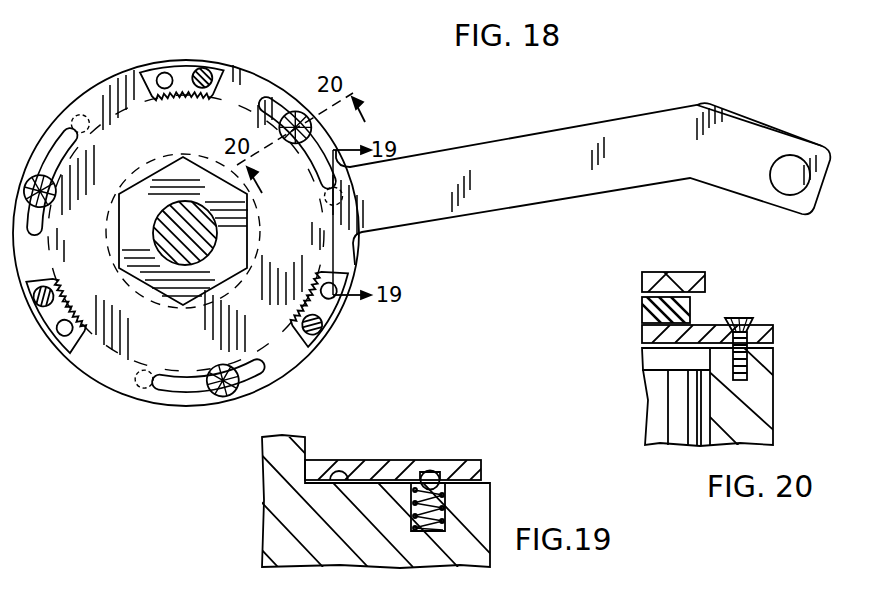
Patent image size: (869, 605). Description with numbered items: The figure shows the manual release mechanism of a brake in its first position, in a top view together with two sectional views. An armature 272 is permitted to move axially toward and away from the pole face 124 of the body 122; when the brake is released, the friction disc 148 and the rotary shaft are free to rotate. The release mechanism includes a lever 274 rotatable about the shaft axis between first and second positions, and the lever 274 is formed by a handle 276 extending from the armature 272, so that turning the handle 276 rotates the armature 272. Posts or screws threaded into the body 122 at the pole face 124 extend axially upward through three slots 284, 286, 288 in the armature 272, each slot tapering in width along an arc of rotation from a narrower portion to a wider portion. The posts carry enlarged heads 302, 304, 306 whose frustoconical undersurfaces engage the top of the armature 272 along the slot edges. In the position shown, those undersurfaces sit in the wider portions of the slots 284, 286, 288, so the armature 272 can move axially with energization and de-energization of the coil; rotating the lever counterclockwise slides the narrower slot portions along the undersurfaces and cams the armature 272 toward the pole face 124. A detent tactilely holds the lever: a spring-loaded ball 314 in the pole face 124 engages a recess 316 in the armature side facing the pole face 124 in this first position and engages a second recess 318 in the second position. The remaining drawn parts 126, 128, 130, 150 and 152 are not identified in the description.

In FIG. 19, the body 122 is at (449, 560).
In FIG. 20, the body 122 is at (756, 437).
In FIG. 20, the pole face 124 is at (768, 348).
In FIG. 18, the ratchet segment 126 is at (196, 62).
In FIG. 18, the ratchet segment 128 is at (322, 326).
In FIG. 18, the ratchet segment 130 is at (45, 322).
In FIG. 20, the friction disc 148 is at (694, 306).
In FIG. 20, the cover bar 150 is at (690, 277).
In FIG. 18, the hex nut 152 is at (220, 271).
In FIG. 18, the armature 272 is at (222, 133).
In FIG. 19, the armature 272 is at (372, 465).
In FIG. 20, the armature 272 is at (768, 330).
In FIG. 18, the lever 274 is at (448, 135).
In FIG. 18, the handle 276 is at (578, 126).
In FIG. 18, the slot 284 is at (301, 172).
In FIG. 18, the slot 286 is at (180, 385).
In FIG. 18, the slot 288 is at (56, 162).
In FIG. 18, the enlarged head 302 is at (296, 113).
In FIG. 20, the enlarged head 302 is at (746, 318).
In FIG. 18, the enlarged head 304 is at (220, 397).
In FIG. 18, the enlarged head 306 is at (40, 175).
In FIG. 19, the spring-loaded ball 314 is at (426, 469).
In FIG. 19, the recess 316 is at (447, 477).
In FIG. 19, the recess 318 is at (342, 481).